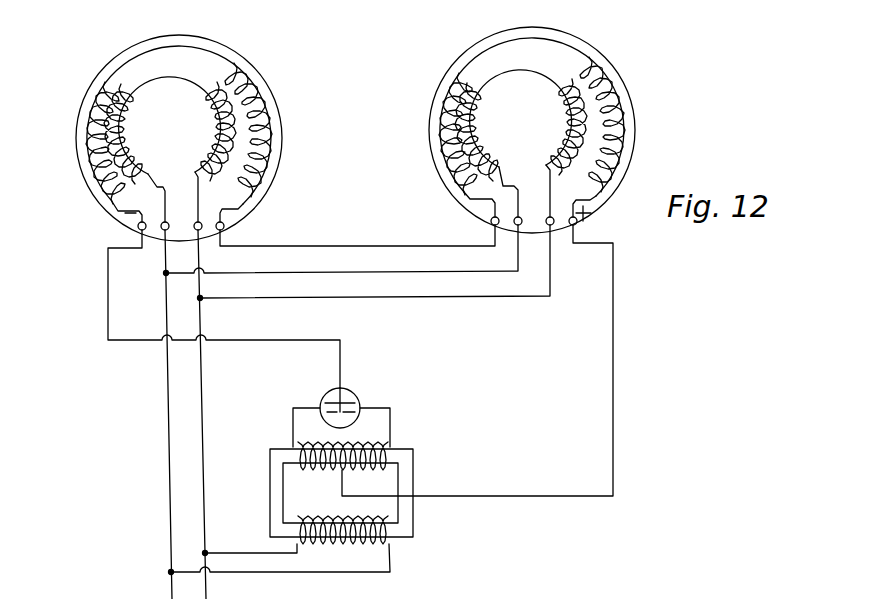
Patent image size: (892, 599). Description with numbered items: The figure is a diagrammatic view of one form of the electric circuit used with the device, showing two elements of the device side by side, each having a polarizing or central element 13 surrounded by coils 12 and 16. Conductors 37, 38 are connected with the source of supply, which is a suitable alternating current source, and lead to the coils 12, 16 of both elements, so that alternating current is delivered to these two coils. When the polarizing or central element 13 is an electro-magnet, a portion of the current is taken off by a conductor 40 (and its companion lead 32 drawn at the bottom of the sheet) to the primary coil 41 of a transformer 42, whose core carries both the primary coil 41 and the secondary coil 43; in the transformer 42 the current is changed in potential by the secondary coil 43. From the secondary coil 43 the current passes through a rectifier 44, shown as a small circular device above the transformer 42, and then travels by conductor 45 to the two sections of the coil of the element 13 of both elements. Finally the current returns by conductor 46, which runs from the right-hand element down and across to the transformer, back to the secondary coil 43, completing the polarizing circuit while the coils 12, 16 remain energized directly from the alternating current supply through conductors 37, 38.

The coil 12 is at (133, 132).
The polarizing or central element 13 is at (92, 117).
The coil 16 is at (223, 143).
The supply conductor 32 is at (263, 577).
The conductor 37 is at (408, 275).
The conductor 38 is at (485, 297).
The conductor 40 is at (232, 552).
The primary coil 41 is at (367, 550).
The transformer 42 is at (405, 452).
The secondary coil 43 is at (363, 472).
The rectifier 44 is at (355, 393).
The conductor 45 is at (348, 245).
The conductor 46 is at (615, 337).